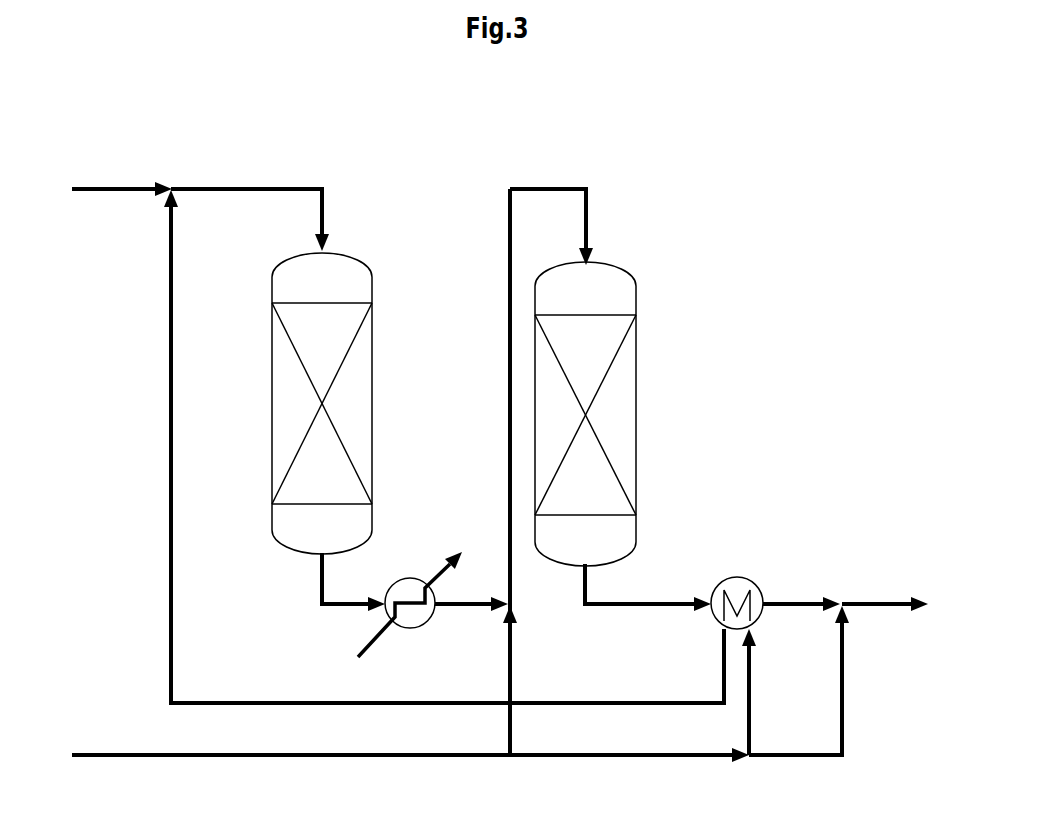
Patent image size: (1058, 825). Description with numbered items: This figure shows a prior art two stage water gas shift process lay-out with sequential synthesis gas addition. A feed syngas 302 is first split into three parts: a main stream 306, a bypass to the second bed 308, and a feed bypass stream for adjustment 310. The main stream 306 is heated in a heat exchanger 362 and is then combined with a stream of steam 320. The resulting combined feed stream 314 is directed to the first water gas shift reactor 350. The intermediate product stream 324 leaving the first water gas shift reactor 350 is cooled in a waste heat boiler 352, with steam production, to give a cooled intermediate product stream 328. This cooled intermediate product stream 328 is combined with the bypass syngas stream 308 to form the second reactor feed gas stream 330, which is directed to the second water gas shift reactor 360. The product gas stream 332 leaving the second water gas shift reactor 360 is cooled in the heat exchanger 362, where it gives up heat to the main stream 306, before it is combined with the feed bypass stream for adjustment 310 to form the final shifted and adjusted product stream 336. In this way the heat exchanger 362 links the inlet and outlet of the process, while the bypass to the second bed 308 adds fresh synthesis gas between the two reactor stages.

The feed syngas 302 is at (98, 753).
The main stream 306 is at (749, 688).
The bypass to the second bed 308 is at (510, 668).
The feed bypass stream for adjustment 310 is at (842, 688).
The combined feed stream 314 is at (229, 187).
The steam 320 is at (97, 187).
The intermediate product stream 324 is at (329, 602).
The cooled intermediate product stream 328 is at (456, 602).
The second reactor feed gas stream 330 is at (536, 187).
The product gas stream 332 is at (629, 602).
The shifted and adjusted product stream 336 is at (864, 602).
The first water gas shift reactor 350 is at (372, 403).
The waste heat boiler 352 is at (430, 621).
The second water gas shift reactor 360 is at (636, 416).
The heat exchanger 362 is at (752, 582).